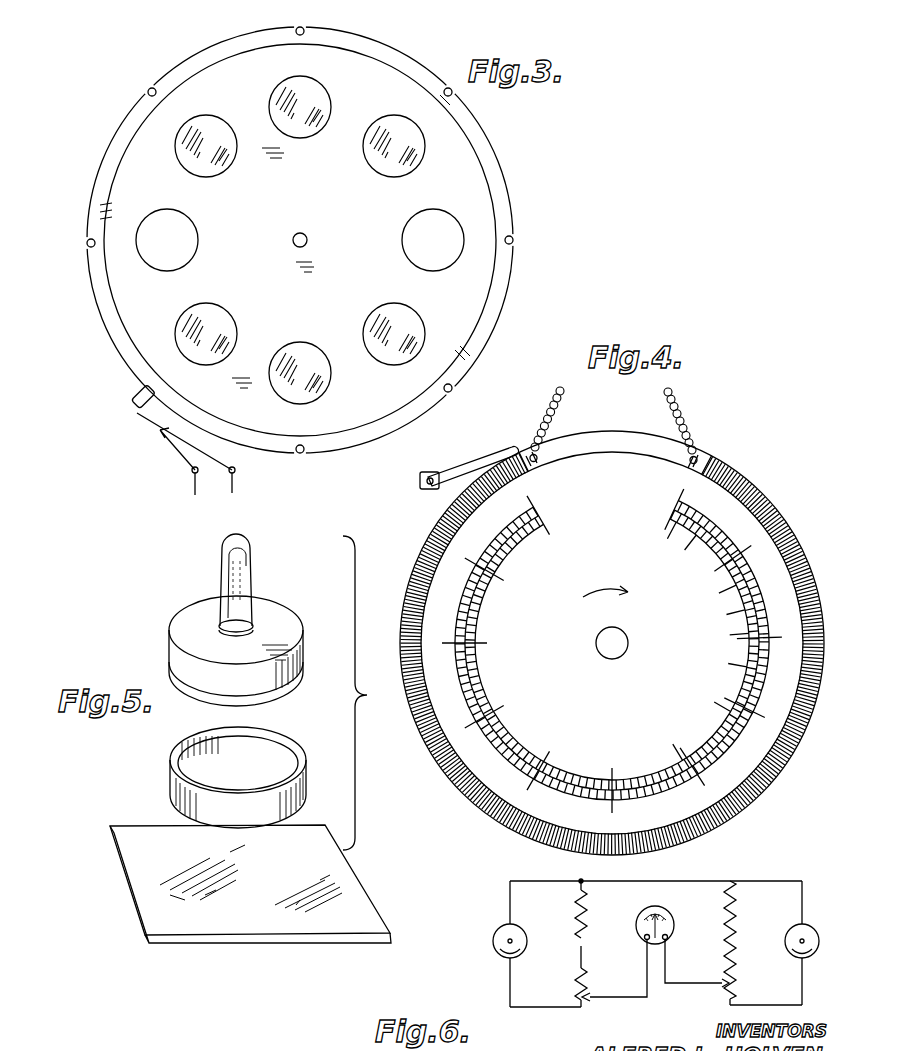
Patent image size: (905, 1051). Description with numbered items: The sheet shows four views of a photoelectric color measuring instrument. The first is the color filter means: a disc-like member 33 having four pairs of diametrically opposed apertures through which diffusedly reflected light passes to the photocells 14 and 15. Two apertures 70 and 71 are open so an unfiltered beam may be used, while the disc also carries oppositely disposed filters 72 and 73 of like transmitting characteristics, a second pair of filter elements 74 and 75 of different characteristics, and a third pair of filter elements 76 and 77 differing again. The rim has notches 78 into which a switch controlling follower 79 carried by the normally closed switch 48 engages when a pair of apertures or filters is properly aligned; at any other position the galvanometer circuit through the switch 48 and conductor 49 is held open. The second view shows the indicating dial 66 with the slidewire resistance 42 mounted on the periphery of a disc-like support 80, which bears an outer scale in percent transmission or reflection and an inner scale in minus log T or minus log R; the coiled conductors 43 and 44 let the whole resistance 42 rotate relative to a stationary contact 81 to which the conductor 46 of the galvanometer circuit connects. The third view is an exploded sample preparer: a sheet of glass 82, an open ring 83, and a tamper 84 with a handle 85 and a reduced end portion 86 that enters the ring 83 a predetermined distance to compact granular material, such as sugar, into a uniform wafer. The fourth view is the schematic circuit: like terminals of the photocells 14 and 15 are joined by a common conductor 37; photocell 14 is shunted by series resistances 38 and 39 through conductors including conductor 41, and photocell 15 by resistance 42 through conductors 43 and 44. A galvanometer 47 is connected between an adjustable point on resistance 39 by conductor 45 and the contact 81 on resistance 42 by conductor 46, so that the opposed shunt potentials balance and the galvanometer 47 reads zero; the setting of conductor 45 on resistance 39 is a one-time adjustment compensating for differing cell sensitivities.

In FIG. 3, the disc-like member 33 is at (506, 166).
In FIG. 3, the aperture 70 is at (195, 248).
In FIG. 3, the aperture 71 is at (440, 262).
In FIG. 3, the filter 72 is at (210, 163).
In FIG. 3, the filter 73 is at (392, 306).
In FIG. 3, the filter element 74 is at (300, 130).
In FIG. 3, the filter element 75 is at (304, 348).
In FIG. 3, the filter element 76 is at (380, 163).
In FIG. 3, the filter element 77 is at (225, 318).
In FIG. 3, the notches 78 is at (518, 240).
In FIG. 3, the switch controlling follower 79 is at (140, 398).
In FIG. 3, the normally closed switch 48 is at (170, 445).
In FIG. 3, the conductor 49 is at (190, 495).
In FIG. 3, the conductor 46 is at (232, 487).
In FIG. 4, the conductor 46 is at (420, 482).
In FIG. 6, the conductor 46 is at (684, 990).
In FIG. 4, the fixed resistance 42 is at (452, 776).
In FIG. 6, the fixed resistance 42 is at (739, 939).
In FIG. 4, the conductor 43 is at (668, 392).
In FIG. 4, the conductor 44 is at (535, 392).
In FIG. 6, the conductor 44 is at (802, 980).
In FIG. 4, the disc-like support 80 is at (615, 462).
In FIG. 4, the stationary contact 81 is at (500, 455).
In FIG. 6, the stationary contact 81 is at (720, 978).
In FIG. 4, the indicating dial 66 is at (505, 548).
In FIG. 5, the handle 85 is at (242, 566).
In FIG. 5, the tamper 84 is at (290, 627).
In FIG. 5, the reduced end portion 86 is at (222, 684).
In FIG. 5, the open ring 83 is at (280, 745).
In FIG. 5, the sheet of glass 82 is at (162, 905).
In FIG. 6, the common conductor 37 is at (690, 881).
In FIG. 6, the resistance unit 38 is at (575, 912).
In FIG. 6, the resistance unit 39 is at (575, 988).
In FIG. 6, the galvanometer 47 is at (666, 912).
In FIG. 6, the photocell 14 is at (498, 950).
In FIG. 6, the photocell 15 is at (810, 930).
In FIG. 6, the conductor 41 is at (510, 990).
In FIG. 6, the conductor 45 is at (647, 975).